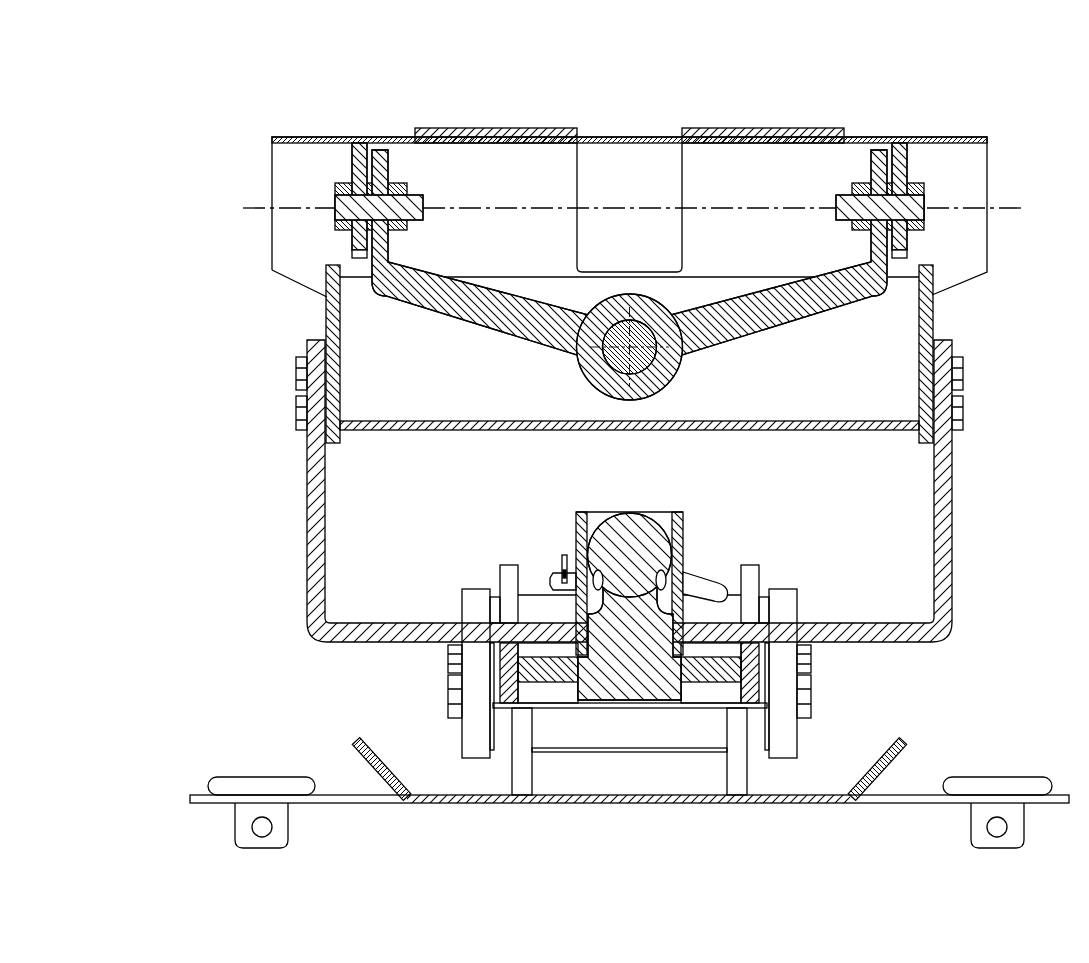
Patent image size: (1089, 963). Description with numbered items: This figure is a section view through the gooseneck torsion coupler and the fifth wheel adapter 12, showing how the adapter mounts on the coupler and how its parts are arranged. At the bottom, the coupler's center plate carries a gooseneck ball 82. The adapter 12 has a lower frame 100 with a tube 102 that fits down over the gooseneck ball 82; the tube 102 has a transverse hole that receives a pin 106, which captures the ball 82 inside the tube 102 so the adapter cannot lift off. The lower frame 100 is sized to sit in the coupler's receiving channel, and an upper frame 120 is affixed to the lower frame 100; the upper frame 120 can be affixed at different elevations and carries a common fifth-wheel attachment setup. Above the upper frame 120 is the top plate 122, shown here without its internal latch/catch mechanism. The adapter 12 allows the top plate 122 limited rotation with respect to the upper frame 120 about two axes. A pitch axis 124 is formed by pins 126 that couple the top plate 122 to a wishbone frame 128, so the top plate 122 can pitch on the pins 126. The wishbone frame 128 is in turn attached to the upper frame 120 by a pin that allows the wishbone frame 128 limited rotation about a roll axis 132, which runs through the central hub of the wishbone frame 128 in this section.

The fifth wheel adapter 12 is at (230, 120).
The gooseneck ball 82 is at (618, 517).
The lower frame 100 is at (307, 522).
The tube 102 is at (683, 525).
The pin 106 is at (713, 575).
The upper frame 120 is at (326, 317).
The top plate 122 is at (760, 128).
The pitch axis 124 is at (1013, 205).
The pins 126 is at (335, 197).
The wishbone frame 128 is at (493, 315).
The roll axis 132 is at (673, 374).